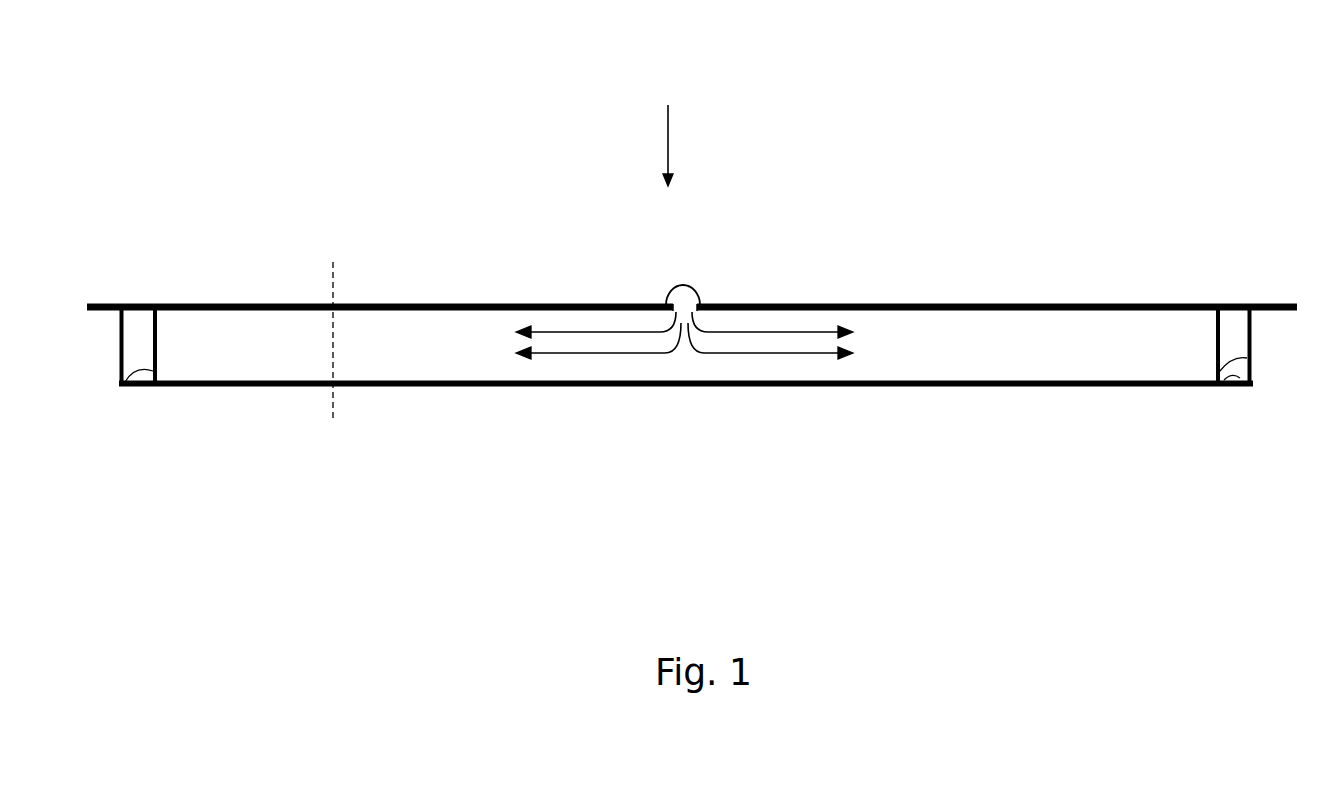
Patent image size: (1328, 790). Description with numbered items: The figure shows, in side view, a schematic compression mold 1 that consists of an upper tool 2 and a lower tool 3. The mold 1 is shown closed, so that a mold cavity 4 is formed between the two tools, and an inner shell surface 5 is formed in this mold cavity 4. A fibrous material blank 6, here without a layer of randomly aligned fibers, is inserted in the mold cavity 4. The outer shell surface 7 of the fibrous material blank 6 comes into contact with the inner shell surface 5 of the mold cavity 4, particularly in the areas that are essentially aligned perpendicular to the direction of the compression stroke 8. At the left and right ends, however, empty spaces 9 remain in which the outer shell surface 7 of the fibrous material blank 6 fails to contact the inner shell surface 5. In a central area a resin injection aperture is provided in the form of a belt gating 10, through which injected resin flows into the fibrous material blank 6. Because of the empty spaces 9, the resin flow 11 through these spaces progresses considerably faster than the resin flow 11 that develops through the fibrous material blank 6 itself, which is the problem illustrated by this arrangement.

The mold 1 is at (868, 159).
The upper tool 2 is at (1055, 304).
The lower tool 3 is at (1243, 389).
The mold cavity 4 is at (140, 318).
The inner shell surface 5 is at (150, 383).
The fibrous material blank 6 is at (973, 364).
The outer shell surface 7 is at (1251, 358).
The compression stroke 8 is at (668, 140).
The empty spaces 9 is at (1225, 347).
The belt gating 10 is at (688, 283).
The resin flow 11 is at (733, 353).